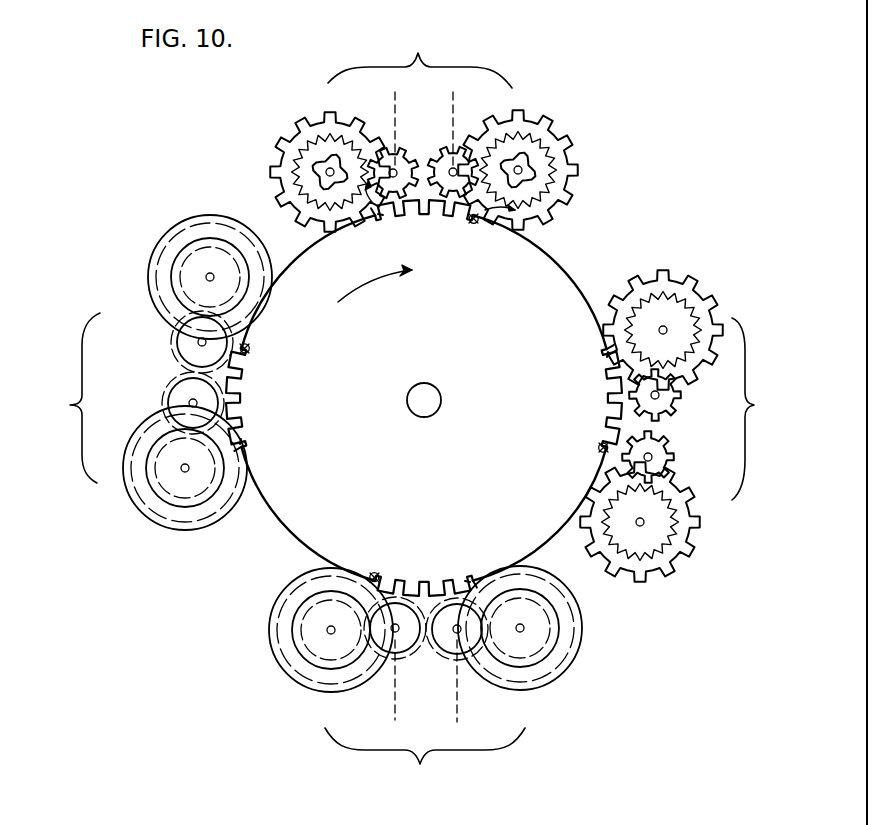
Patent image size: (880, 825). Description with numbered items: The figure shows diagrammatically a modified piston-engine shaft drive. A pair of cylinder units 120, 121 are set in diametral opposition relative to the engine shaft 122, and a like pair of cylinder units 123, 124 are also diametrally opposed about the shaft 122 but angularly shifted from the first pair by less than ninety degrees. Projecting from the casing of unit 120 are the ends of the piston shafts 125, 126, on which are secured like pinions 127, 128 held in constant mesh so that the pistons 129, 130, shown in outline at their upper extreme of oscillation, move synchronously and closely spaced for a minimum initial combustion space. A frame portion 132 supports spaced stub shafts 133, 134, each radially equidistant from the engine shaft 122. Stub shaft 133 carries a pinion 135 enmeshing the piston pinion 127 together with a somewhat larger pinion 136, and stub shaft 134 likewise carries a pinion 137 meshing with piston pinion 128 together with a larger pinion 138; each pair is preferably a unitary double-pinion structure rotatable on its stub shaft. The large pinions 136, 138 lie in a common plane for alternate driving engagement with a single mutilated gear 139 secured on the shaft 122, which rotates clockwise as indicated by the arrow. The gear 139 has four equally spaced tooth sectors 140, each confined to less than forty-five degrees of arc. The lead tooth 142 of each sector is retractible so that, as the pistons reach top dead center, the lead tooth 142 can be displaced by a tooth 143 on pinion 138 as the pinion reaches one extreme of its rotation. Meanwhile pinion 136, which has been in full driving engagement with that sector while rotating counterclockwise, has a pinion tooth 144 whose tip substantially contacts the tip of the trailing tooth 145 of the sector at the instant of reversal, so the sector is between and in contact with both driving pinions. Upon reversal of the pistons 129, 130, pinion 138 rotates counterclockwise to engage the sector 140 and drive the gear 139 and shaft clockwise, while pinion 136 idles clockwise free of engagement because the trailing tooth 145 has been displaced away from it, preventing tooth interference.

The cylinder unit 120 is at (420, 60).
The cylinder unit 121 is at (425, 758).
The engine shaft 122 is at (432, 414).
The cylinder unit 123 is at (66, 398).
The cylinder unit 124 is at (761, 409).
The piston shaft 125 is at (397, 165).
The piston shaft 126 is at (447, 152).
The pinion 127 is at (388, 160).
The pinion 128 is at (456, 165).
The piston 129 is at (455, 716).
The piston 130 is at (380, 698).
The frame portion 132 is at (310, 177).
The stub shaft 133 is at (327, 172).
The stub shaft 134 is at (520, 170).
The pinion 135 is at (298, 168).
The large pinion 136 is at (300, 128).
The pinion 137 is at (545, 145).
The large pinion 138 is at (528, 118).
The mutilated gear 139 is at (545, 252).
The tooth sector 140 is at (426, 215).
The lead tooth 142 is at (477, 228).
The pinion tooth 143 is at (500, 210).
The pinion tooth 144 is at (349, 202).
The trailing tooth 145 is at (383, 216).